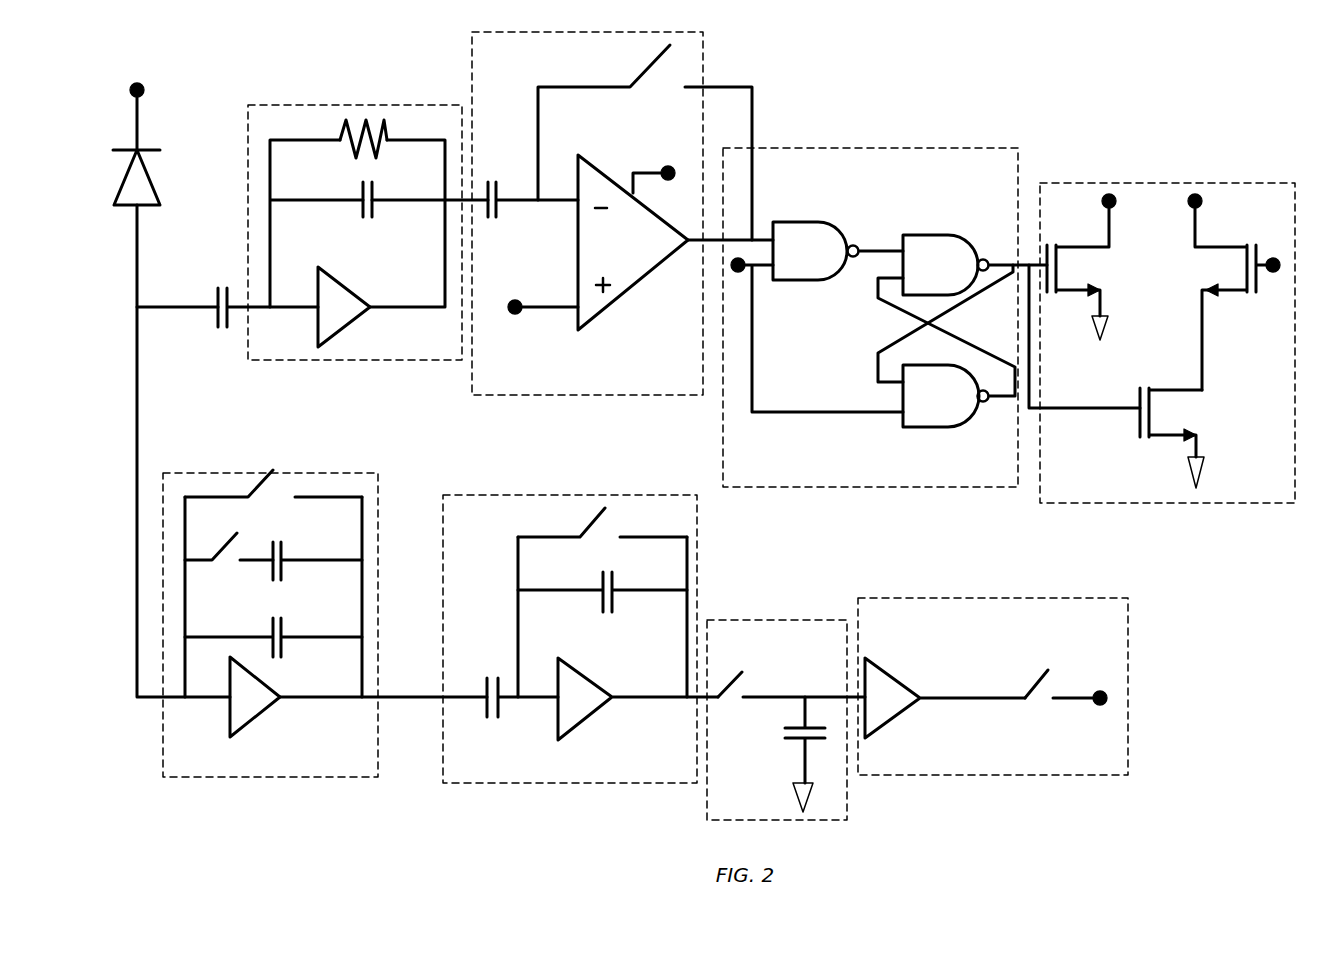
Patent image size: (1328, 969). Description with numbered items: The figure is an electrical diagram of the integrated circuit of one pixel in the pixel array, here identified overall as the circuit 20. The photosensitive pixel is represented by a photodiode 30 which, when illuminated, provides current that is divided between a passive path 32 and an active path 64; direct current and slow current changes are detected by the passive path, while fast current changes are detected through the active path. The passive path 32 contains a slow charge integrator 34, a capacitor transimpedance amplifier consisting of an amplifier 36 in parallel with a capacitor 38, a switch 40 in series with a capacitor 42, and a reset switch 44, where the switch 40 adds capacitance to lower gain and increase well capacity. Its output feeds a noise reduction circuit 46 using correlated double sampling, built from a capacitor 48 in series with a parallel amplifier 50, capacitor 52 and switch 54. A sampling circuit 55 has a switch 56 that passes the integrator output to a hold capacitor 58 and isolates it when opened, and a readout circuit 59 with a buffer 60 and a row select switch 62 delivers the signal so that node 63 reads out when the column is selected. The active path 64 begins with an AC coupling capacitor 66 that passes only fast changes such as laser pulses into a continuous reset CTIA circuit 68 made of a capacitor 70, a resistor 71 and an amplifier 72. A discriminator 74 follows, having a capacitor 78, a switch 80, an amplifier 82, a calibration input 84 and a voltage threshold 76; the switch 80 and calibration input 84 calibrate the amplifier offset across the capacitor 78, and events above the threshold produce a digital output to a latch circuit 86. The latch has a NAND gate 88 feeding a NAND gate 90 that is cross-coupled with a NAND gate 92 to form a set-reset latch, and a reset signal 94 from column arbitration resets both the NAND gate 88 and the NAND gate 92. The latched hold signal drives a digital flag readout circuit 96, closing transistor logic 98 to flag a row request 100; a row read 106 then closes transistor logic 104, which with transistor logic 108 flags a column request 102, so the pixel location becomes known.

The photodetector circuit 20 is at (1186, 632).
The photodiode 30 is at (157, 176).
The passive path 32 is at (150, 420).
The slow charge integrator 34 is at (325, 603).
The amplifier 36 is at (257, 720).
The capacitor 38 is at (284, 628).
The switch 40 is at (222, 548).
The capacitor 42 is at (284, 545).
The reset switch 44 is at (265, 482).
The noise reduction circuit 46 is at (569, 612).
The capacitor 48 is at (484, 685).
The amplifier 50 is at (595, 715).
The capacitor 52 is at (615, 605).
The switch 54 is at (600, 520).
The sampling circuit 55 is at (786, 690).
The switch 56 is at (722, 688).
The hold capacitor 58 is at (790, 748).
The readout circuit 59 is at (993, 655).
The buffer 60 is at (897, 672).
The row select switch 62 is at (1030, 682).
The node 63 is at (1103, 710).
The active path 64 is at (160, 303).
The AC coupling capacitor 66 is at (228, 328).
The continuous reset CTIA circuit 68 is at (367, 204).
The capacitor 70 is at (360, 197).
The resistor 71 is at (383, 142).
The amplifier 72 is at (365, 303).
The discriminator 74 is at (622, 238).
The voltage threshold 76 is at (517, 318).
The capacitor 78 is at (486, 198).
The switch 80 is at (660, 55).
The amplifier 82 is at (651, 270).
The calibration input 84 is at (674, 168).
The latch circuit 86 is at (885, 294).
The NAND gate 88 is at (815, 222).
The NAND gate 90 is at (940, 235).
The NAND gate 92 is at (930, 428).
The reset signal 94 is at (742, 272).
The digital flag readout circuit 96 is at (1162, 324).
The transistor logic 98 is at (1068, 245).
The row request 100 is at (1112, 196).
The column request 102 is at (1198, 196).
The transistor logic 104 is at (1215, 247).
The row read 106 is at (1275, 275).
The transistor logic 108 is at (1178, 392).